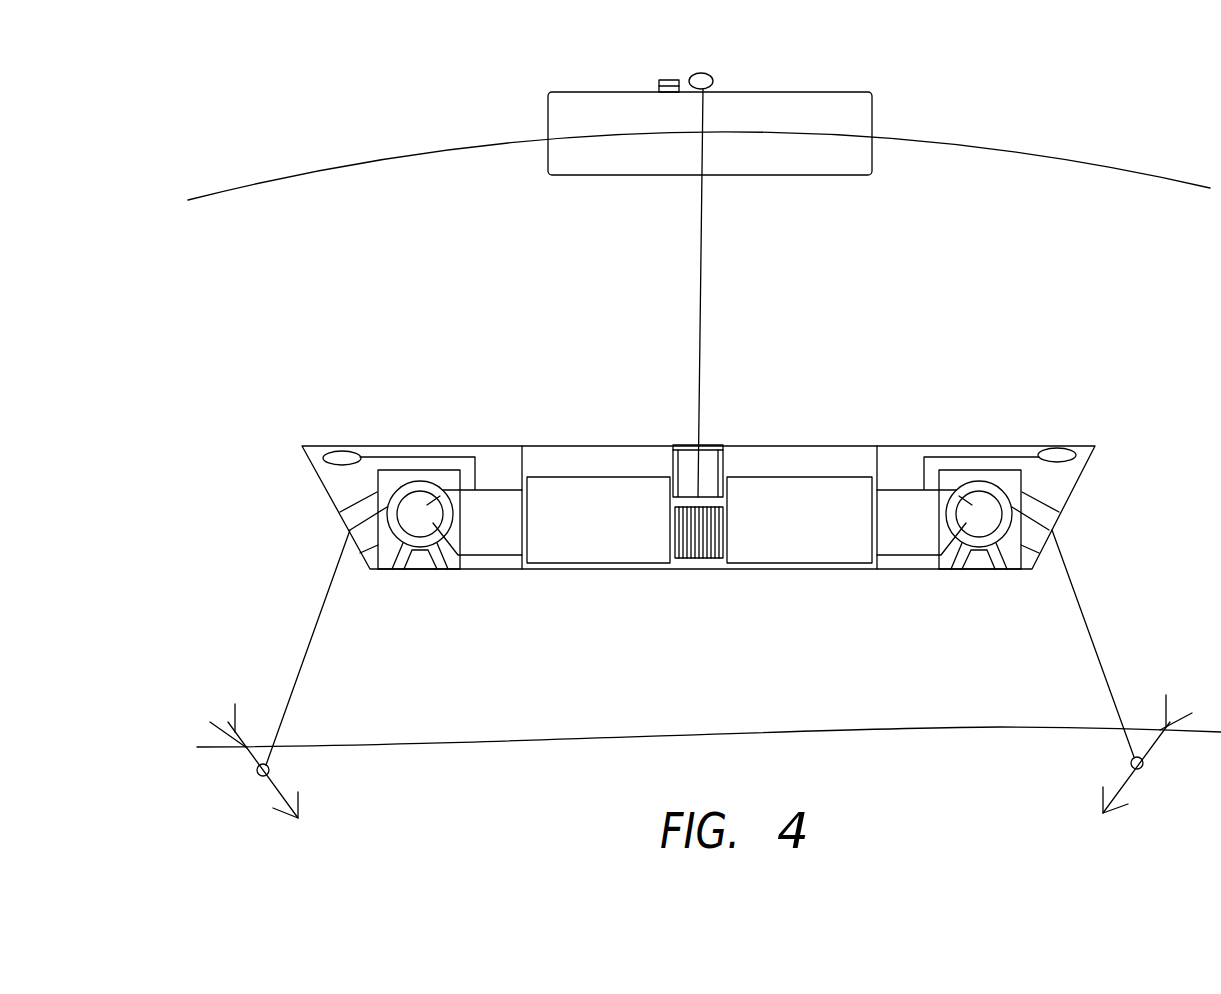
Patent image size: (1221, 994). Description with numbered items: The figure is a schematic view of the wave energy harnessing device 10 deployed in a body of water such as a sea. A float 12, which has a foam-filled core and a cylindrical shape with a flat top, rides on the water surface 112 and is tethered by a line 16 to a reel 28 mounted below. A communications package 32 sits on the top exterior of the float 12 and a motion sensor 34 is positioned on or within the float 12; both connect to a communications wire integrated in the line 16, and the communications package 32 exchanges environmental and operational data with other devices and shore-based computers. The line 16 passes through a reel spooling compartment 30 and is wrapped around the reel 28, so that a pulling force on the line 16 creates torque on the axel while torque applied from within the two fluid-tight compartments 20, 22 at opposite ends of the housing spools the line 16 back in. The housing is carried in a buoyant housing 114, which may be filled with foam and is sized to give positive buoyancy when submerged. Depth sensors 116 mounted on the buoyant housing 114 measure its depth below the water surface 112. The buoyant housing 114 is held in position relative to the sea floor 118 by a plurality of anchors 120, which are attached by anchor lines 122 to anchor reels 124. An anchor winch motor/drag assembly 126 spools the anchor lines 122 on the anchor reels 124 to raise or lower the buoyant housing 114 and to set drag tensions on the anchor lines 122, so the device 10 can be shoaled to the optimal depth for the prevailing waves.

The device 10 is at (266, 131).
The float 12 is at (784, 176).
The line 16 is at (703, 296).
The fluid-tight compartment 20 is at (550, 477).
The fluid-tight compartment 22 is at (812, 477).
The reel 28 is at (716, 558).
The reel spooling compartment 30 is at (720, 465).
The communications package 32 is at (703, 73).
The motion sensor 34 is at (664, 80).
The water surface 112 is at (350, 167).
The buoyant housing 114 is at (569, 447).
The depth sensors 116 is at (341, 451).
The sea floor 118 is at (415, 745).
The anchors 120 is at (248, 755).
The anchor lines 122 is at (318, 620).
The anchor reels 124 is at (419, 481).
The anchor winch motor/drag assembly 126 is at (418, 515).